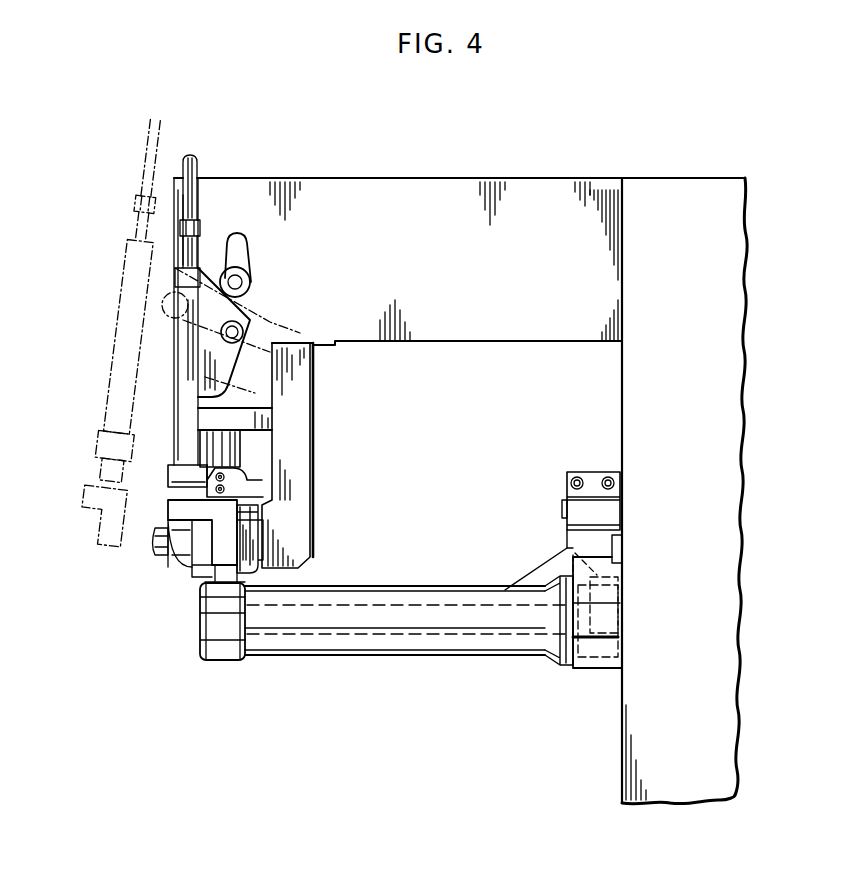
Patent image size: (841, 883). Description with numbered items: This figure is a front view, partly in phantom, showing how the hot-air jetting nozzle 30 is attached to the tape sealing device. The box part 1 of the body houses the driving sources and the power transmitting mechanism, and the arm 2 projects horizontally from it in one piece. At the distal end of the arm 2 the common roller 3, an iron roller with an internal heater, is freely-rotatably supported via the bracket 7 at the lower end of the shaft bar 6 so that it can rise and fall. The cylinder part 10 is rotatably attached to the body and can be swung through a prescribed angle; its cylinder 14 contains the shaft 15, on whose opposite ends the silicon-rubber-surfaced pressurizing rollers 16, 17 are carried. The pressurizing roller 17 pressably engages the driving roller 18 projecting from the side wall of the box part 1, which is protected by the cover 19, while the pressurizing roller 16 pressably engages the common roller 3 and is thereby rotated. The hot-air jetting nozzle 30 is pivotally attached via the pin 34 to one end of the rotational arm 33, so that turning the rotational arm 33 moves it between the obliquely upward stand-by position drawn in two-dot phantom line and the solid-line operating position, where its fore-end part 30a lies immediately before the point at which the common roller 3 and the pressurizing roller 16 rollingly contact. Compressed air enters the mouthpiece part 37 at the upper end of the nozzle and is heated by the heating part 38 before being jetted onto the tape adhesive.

The box part of the body 1 is at (700, 195).
The arm 2 is at (352, 186).
The common roller 3 is at (198, 574).
The shaft bar 6 is at (230, 449).
The bracket 7 is at (253, 487).
The cylinder part 10 is at (325, 657).
The cylinder 14 is at (440, 657).
The shaft 15 is at (378, 633).
The pressurizing roller 16 is at (228, 661).
The pressurizing roller 17 is at (592, 658).
The driving roller 18 is at (567, 548).
The cover 19 is at (600, 651).
The hot-air jetting nozzle 30 is at (170, 300).
The fore-end part of the hot air jetting nozzle 30a is at (237, 557).
The rotational arm 33 is at (250, 255).
The pin 34 is at (246, 322).
The mouthpiece part 37 is at (198, 198).
The heating part 38 is at (188, 355).